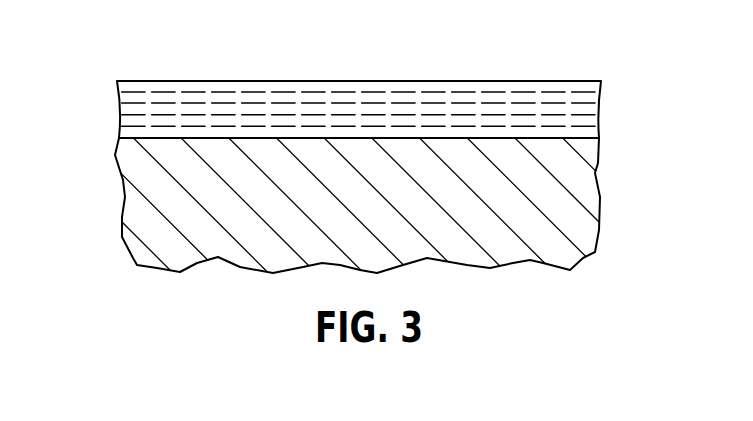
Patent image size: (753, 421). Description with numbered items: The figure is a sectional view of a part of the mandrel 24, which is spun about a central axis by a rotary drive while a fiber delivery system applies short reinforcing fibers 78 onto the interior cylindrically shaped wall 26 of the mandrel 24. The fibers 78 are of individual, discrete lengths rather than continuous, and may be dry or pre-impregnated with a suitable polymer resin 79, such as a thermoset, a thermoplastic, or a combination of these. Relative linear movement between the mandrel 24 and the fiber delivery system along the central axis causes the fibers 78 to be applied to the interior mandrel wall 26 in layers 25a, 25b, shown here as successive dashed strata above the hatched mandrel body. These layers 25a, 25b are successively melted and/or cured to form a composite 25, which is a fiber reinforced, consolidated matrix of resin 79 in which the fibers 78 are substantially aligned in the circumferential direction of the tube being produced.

The mandrel 24 is at (200, 230).
The composite 25 is at (615, 82).
The layer 25a is at (105, 81).
The layer 25b is at (105, 108).
The interior cylindrically shaped wall 26 is at (488, 125).
The short reinforcing fibers 78 is at (162, 115).
The polymer resin 79 is at (327, 98).